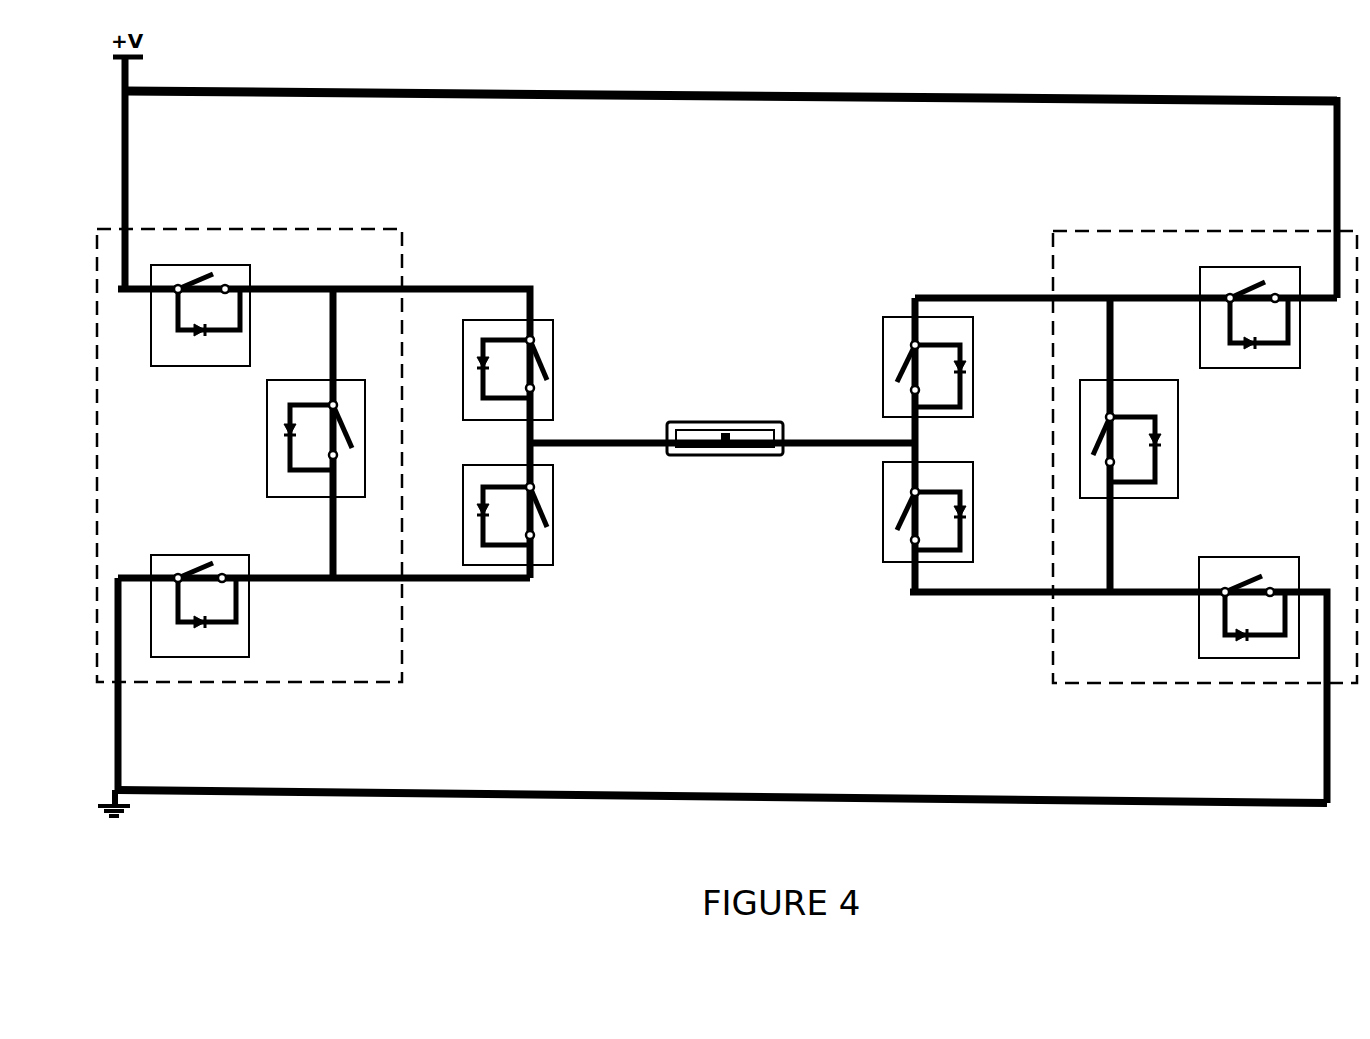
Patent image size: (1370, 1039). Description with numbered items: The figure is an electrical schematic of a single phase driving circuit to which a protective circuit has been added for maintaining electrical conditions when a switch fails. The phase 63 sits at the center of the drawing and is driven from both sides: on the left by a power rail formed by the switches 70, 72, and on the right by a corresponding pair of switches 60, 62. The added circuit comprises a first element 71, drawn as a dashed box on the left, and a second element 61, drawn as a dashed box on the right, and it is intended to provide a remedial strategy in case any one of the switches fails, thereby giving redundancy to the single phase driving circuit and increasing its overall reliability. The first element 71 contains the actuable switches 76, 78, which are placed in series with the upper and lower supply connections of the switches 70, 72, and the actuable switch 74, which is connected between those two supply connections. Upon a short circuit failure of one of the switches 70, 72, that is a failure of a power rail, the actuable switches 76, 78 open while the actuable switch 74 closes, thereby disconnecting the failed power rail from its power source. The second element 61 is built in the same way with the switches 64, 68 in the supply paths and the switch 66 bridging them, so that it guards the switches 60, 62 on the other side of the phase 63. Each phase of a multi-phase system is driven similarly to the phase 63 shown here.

The relay switch 60 is at (883, 365).
The second element 61 is at (1053, 231).
The relay switch 62 is at (883, 518).
The phase 63 is at (718, 422).
The relay switch 64 is at (1253, 268).
The relay switch 66 is at (1180, 437).
The relay switch 68 is at (1252, 557).
The switch 70 is at (555, 362).
The first element 71 is at (402, 229).
The switch 72 is at (552, 520).
The actuable switch 74 is at (367, 437).
The actuable switch 76 is at (200, 265).
The actuable switch 78 is at (197, 555).